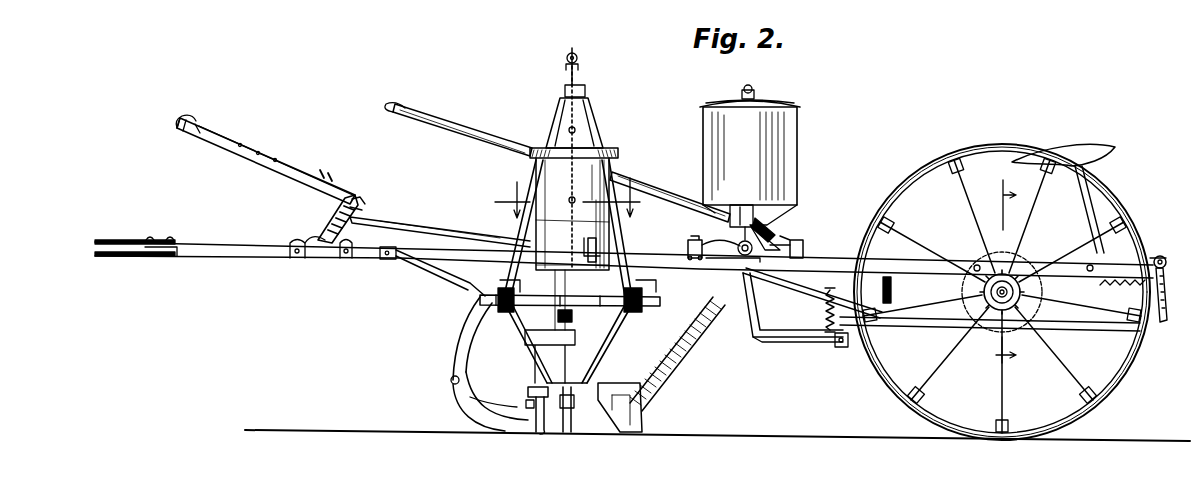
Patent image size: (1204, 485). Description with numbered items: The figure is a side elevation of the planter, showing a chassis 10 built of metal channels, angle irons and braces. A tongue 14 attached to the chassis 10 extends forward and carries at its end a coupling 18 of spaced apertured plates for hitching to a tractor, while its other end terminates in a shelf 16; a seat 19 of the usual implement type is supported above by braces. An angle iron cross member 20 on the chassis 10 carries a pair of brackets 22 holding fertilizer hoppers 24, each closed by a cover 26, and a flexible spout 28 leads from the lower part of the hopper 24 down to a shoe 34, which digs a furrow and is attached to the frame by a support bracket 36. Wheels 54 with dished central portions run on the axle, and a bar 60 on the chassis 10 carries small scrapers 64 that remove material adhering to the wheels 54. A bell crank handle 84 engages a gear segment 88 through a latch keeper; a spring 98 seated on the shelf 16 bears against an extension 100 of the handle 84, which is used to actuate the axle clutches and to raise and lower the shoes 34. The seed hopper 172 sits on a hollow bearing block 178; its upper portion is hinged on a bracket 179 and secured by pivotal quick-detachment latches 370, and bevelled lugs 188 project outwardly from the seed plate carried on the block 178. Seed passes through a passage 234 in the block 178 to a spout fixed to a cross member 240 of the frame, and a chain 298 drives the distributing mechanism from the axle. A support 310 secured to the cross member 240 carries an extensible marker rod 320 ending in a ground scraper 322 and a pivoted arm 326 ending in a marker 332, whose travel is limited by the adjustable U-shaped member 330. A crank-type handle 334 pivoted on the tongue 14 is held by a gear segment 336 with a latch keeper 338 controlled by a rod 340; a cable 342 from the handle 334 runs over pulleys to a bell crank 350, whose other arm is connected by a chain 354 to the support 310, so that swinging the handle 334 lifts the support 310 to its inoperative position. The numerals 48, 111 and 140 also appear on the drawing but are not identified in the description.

The chassis 10 is at (838, 262).
The tongue 14 is at (240, 260).
The shelf 16 is at (795, 340).
The coupling 18 is at (127, 236).
The seat 19 is at (1105, 155).
The angle iron cross member 20 is at (690, 243).
The bracket 22 is at (722, 259).
The hopper 24 is at (790, 156).
The cover 26 is at (775, 98).
The flexible spout 28 is at (678, 370).
The shoe 34 is at (470, 397).
The support bracket 36 is at (470, 330).
The drag rod 48 is at (785, 281).
The wheel 54 is at (1110, 182).
The bar 60 is at (1164, 263).
The scraper 64 is at (1167, 298).
The handle 84 is at (650, 188).
The gear segment 88 is at (797, 240).
The spring 98 is at (845, 347).
The extension 100 is at (825, 300).
The section line 111 is at (572, 203).
The wheel hub drive 140 is at (1038, 305).
The hopper 172 is at (612, 160).
The hollow support 178 is at (528, 306).
The bracket 179 is at (515, 250).
The lug 188 is at (520, 282).
The passage 234 is at (590, 117).
The cross member 240 is at (598, 352).
The chain 298 is at (650, 325).
The support 310 is at (509, 323).
The rod 320 is at (574, 404).
The scraper 322 is at (576, 432).
The arm 326 is at (527, 406).
The U-shaped member 330 is at (528, 393).
The marker 332 is at (538, 432).
The crank-type handle 334 is at (298, 178).
The gear segment 336 is at (298, 258).
The latch keeper 338 is at (348, 258).
The rod 340 is at (243, 145).
The cable 342 is at (395, 216).
The bell crank 350 is at (580, 58).
The chain 354 is at (571, 172).
The pivotal latch 370 is at (592, 252).